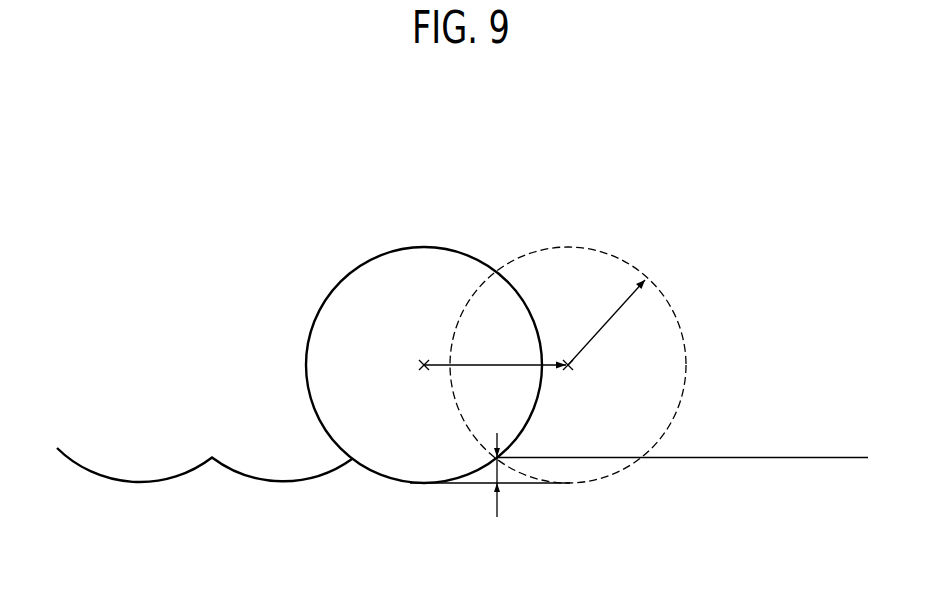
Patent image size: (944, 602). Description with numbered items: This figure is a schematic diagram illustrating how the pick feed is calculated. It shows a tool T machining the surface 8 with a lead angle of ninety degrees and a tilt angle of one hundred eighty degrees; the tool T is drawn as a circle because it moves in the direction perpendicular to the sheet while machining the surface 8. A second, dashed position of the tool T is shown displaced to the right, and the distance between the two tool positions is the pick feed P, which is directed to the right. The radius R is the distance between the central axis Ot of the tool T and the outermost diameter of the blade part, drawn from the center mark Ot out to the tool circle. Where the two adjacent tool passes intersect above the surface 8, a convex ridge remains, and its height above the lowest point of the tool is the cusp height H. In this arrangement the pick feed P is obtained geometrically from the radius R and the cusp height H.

The surface 8 is at (763, 457).
The tool T is at (412, 248).
The central axis of the tool Ot is at (420, 362).
The pick feed P is at (495, 355).
The radius R is at (606, 322).
The cusp height H is at (508, 478).